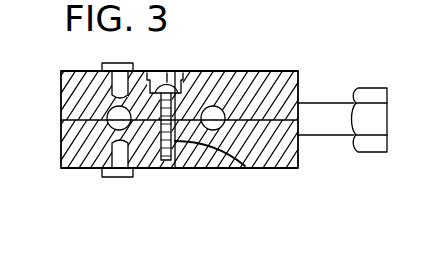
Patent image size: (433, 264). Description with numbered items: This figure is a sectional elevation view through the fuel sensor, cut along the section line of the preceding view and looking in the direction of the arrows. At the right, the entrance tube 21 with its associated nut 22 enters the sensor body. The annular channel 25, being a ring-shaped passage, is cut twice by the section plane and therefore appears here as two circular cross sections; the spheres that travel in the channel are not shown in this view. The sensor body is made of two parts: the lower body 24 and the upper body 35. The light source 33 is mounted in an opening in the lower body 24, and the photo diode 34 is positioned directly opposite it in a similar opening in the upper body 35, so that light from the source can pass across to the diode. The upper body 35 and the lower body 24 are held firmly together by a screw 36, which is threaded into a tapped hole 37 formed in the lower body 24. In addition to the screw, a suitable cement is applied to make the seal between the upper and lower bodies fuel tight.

The entrance tube 21 is at (325, 102).
The nut 22 is at (358, 150).
The body 24 is at (62, 148).
The annular channel 25 is at (113, 116).
The light source 33 is at (115, 177).
The photo diode 34 is at (130, 63).
The upper body 35 is at (258, 71).
The screw 36 is at (183, 70).
The tapped hole 37 is at (222, 168).